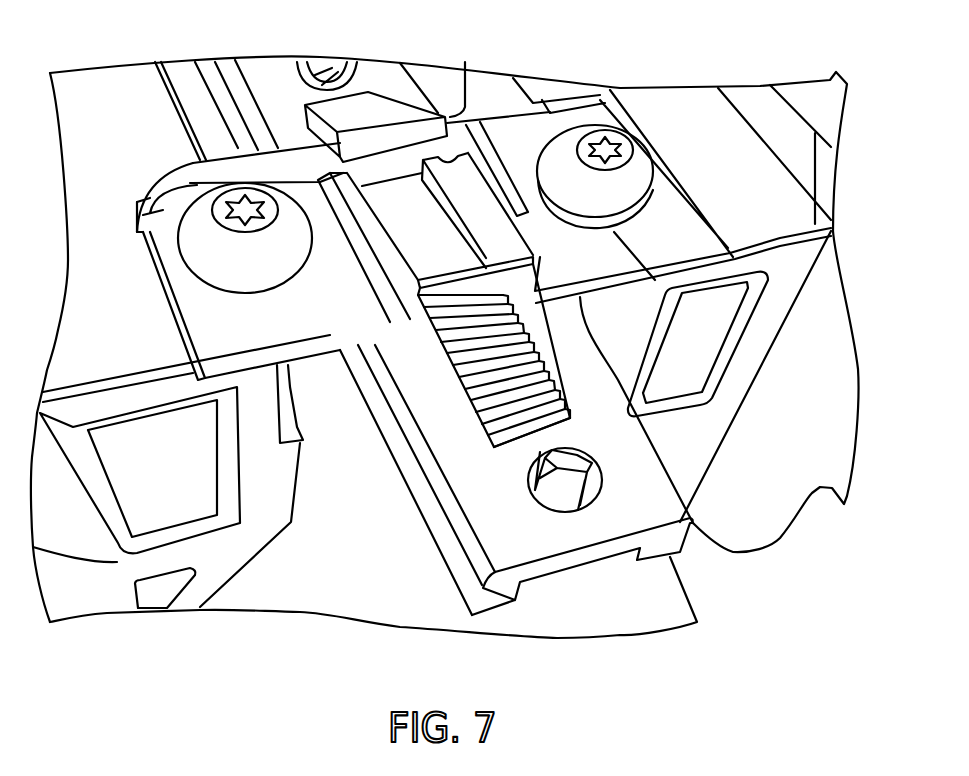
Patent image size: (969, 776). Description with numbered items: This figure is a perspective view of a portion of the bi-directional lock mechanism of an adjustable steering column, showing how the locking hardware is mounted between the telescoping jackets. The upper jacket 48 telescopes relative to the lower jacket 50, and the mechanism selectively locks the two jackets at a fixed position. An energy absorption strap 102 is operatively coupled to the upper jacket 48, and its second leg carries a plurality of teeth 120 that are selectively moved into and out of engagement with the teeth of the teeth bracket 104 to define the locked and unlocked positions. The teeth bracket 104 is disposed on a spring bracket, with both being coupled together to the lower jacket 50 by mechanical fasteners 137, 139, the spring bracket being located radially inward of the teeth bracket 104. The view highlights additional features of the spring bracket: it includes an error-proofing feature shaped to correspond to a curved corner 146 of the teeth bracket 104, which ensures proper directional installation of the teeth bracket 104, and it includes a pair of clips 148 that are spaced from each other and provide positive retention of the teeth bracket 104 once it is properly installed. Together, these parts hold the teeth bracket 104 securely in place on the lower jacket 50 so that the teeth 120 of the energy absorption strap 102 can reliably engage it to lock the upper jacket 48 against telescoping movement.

The upper jacket 48 is at (277, 587).
The lower jacket 50 is at (770, 195).
The energy absorption strap 102 is at (637, 498).
The teeth bracket 104 is at (458, 285).
The plurality of teeth 120 is at (563, 381).
The mechanical fastener 137 is at (200, 227).
The mechanical fastener 139 is at (633, 180).
The curved corner 146 is at (143, 218).
The clips 148 is at (388, 135).